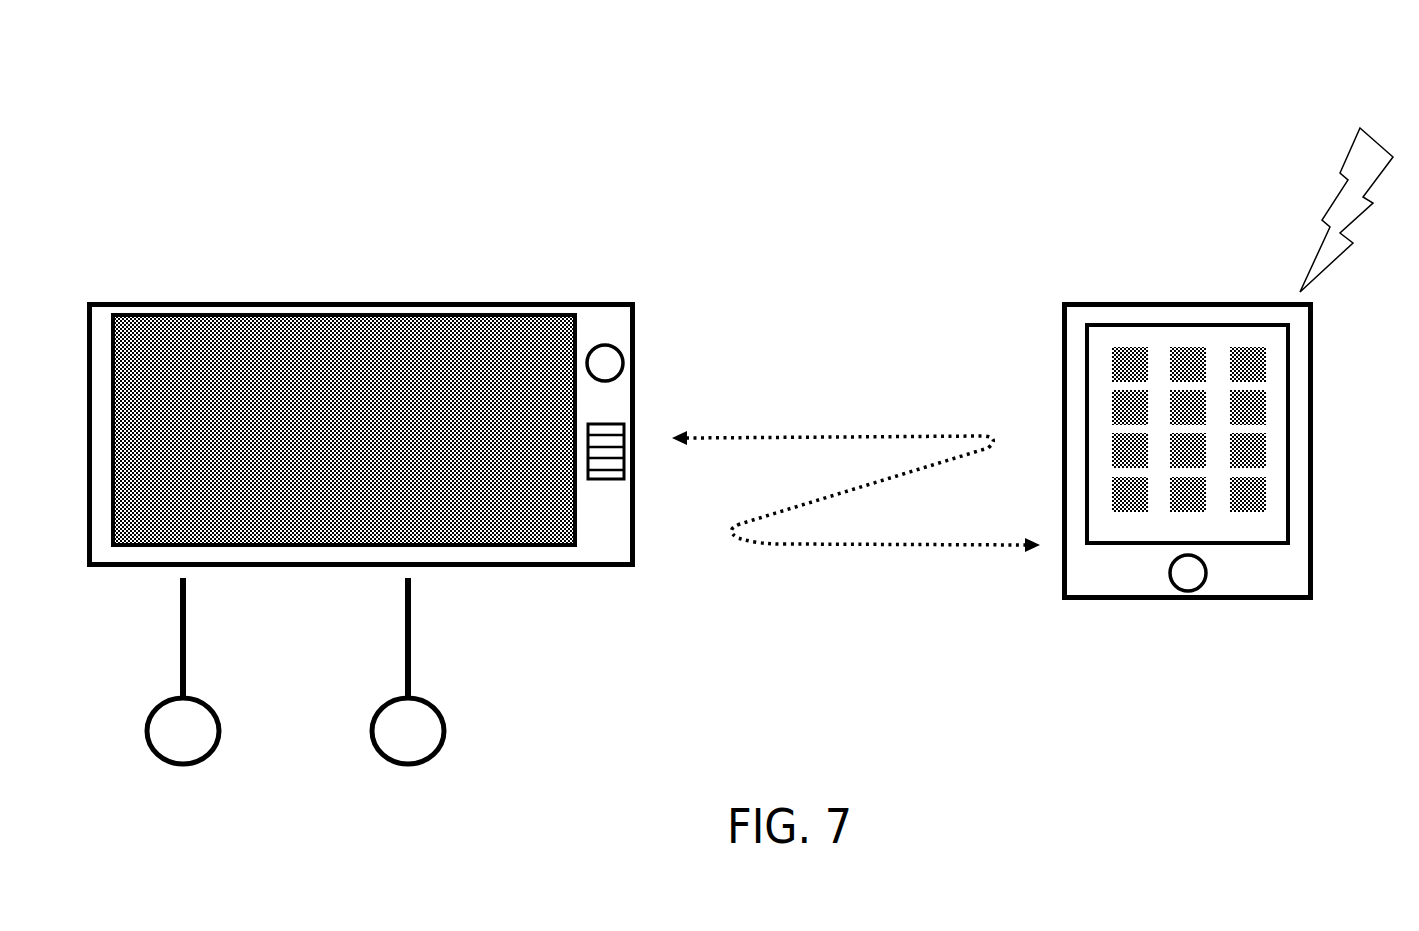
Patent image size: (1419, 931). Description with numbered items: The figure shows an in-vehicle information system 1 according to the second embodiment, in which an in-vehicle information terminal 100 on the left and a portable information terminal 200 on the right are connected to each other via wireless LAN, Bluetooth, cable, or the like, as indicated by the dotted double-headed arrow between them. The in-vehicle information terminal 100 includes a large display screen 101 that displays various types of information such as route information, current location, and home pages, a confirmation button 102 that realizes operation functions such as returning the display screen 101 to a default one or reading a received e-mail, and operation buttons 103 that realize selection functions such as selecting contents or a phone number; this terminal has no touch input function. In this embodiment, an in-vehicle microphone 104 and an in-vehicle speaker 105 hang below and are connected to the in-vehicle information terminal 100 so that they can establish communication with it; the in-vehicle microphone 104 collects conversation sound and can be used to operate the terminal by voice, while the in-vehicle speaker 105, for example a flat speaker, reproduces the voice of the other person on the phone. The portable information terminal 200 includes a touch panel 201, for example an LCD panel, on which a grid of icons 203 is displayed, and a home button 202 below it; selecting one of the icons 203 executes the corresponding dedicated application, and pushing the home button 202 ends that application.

The in-vehicle information system 1 is at (1098, 139).
The in-vehicle information terminal 100 is at (412, 490).
The display screen 101 is at (433, 333).
The confirmation button 102 is at (627, 355).
The operation buttons 103 is at (610, 482).
The in-vehicle microphone 104 is at (215, 707).
The in-vehicle speaker 105 is at (442, 707).
The portable information terminal 200 is at (1232, 408).
The touch panel 201 is at (1147, 525).
The home button 202 is at (1192, 588).
The icons 203 is at (1267, 502).